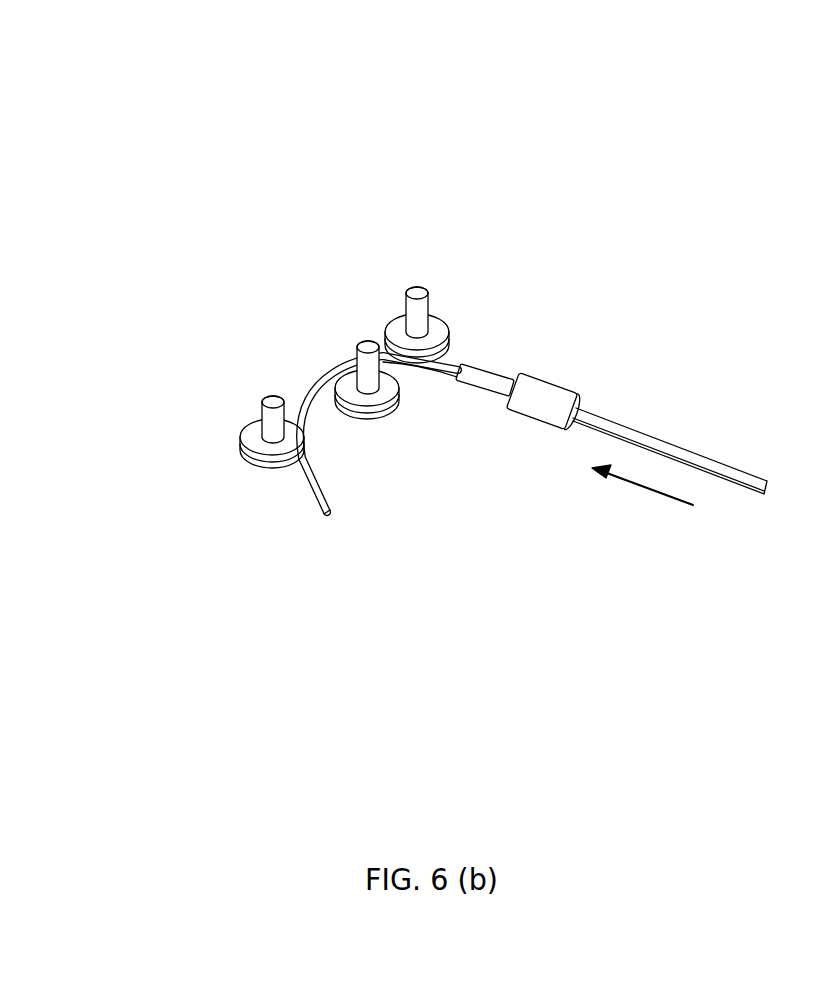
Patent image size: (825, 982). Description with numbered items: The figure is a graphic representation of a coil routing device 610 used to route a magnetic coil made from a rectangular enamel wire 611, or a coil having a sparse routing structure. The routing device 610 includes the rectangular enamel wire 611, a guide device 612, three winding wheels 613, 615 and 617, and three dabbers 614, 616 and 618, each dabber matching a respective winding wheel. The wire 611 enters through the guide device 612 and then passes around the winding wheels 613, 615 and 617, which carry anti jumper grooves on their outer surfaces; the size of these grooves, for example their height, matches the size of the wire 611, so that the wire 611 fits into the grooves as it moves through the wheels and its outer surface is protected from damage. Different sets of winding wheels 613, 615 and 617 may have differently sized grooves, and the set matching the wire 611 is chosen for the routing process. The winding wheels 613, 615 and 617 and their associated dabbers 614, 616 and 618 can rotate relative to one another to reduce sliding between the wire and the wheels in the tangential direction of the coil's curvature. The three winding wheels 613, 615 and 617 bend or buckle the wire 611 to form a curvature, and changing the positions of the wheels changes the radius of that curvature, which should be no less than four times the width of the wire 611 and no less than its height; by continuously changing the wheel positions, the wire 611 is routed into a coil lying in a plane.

The coil routing device 610 is at (462, 53).
The rectangular enamel wire 611 is at (753, 484).
The guide device 612 is at (561, 388).
The winding wheel 613 is at (440, 328).
The dabber 614 is at (418, 292).
The winding wheel 615 is at (243, 435).
The dabber 616 is at (262, 434).
The winding wheel 617 is at (360, 408).
The dabber 618 is at (370, 365).